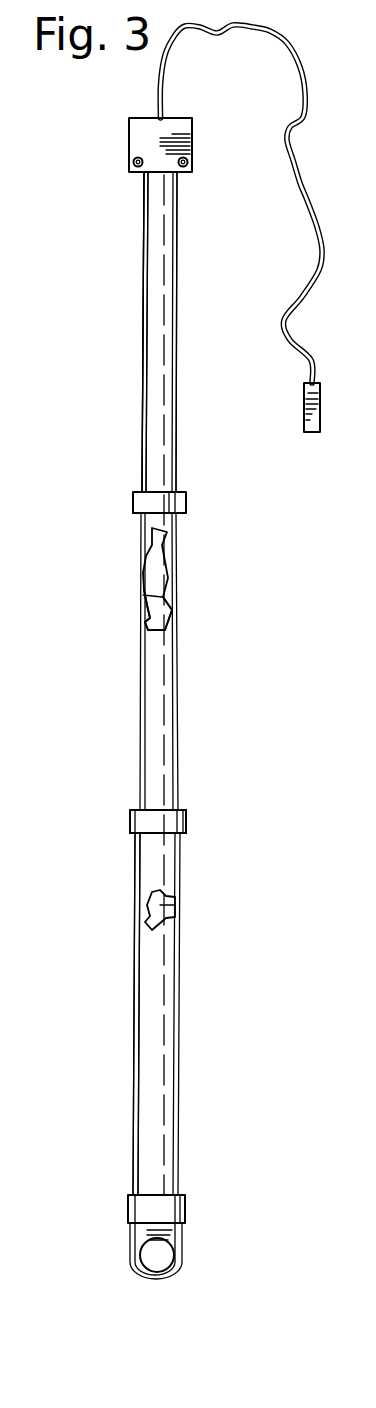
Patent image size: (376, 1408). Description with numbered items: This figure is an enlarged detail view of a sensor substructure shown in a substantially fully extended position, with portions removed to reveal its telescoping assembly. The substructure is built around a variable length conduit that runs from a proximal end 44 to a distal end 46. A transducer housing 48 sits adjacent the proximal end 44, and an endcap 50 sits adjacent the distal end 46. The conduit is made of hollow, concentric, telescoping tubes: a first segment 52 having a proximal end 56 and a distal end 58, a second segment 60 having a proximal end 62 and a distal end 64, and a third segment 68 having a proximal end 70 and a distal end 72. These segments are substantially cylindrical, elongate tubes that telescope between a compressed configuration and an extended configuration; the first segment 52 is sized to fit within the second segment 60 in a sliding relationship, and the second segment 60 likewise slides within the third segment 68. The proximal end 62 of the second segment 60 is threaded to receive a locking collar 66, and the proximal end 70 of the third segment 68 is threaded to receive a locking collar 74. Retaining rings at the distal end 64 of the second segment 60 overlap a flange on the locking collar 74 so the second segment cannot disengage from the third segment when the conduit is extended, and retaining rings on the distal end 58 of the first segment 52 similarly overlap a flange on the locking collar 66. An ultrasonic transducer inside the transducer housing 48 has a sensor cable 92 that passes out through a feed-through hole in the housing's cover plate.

The proximal end 44 is at (182, 181).
The distal end 46 is at (184, 1187).
The transducer housing 48 is at (192, 130).
The endcap 50 is at (185, 1207).
The first segment 52 is at (177, 390).
The proximal end 56 is at (143, 200).
The distal end 58 is at (153, 578).
The second segment 60 is at (178, 645).
The proximal end 62 is at (140, 533).
The distal end 64 is at (177, 905).
The locking collar 66 is at (133, 500).
The third segment 68 is at (180, 1052).
The proximal end 70 is at (137, 850).
The distal end 72 is at (133, 1170).
The locking collar 74 is at (187, 823).
The sensor cable 92 is at (325, 250).